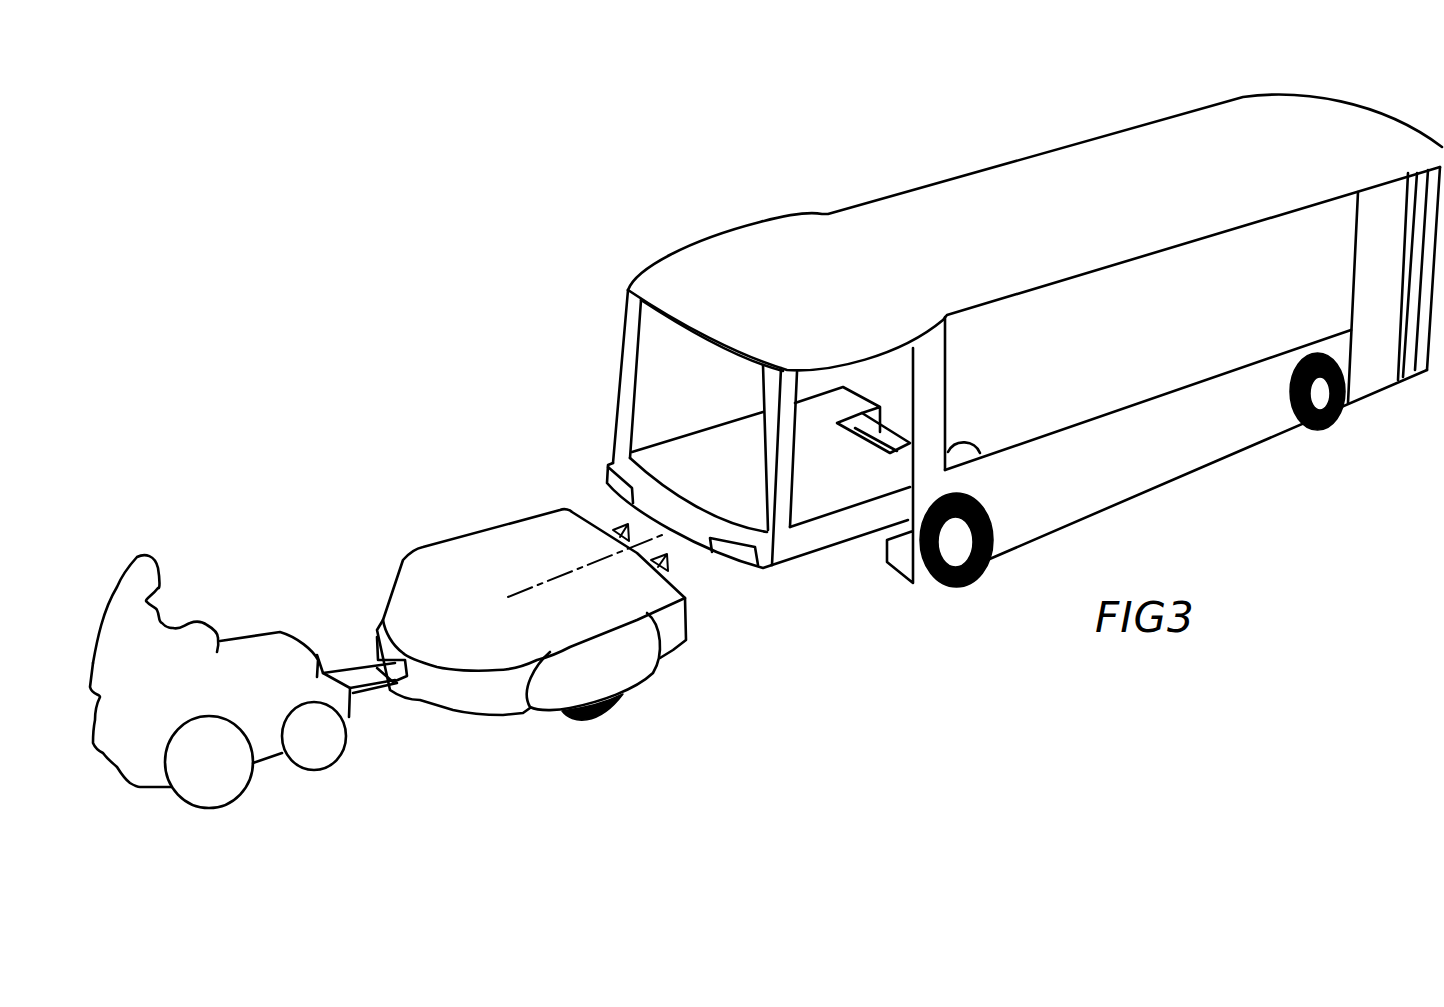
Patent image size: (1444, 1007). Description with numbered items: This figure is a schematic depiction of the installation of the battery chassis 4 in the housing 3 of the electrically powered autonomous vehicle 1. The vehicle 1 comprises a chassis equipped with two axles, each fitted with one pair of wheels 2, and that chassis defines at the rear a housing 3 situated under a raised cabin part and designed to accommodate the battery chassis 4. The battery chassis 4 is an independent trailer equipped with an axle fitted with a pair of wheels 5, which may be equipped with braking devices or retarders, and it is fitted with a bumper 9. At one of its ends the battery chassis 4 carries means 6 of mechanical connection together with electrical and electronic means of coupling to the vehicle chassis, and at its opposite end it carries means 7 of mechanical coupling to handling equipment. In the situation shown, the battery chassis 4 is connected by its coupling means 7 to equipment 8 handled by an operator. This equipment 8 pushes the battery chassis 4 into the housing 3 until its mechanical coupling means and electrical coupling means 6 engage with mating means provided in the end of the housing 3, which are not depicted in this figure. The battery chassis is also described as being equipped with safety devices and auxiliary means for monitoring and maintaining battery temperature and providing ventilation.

The electrically powered autonomous vehicle 1 is at (995, 146).
The wheels 2 is at (960, 586).
The housing 3 is at (820, 561).
The battery chassis 4 is at (467, 522).
The wheels 5 is at (603, 718).
The means of mechanical connection and electrical coupling 6 is at (668, 563).
The means of mechanical coupling 7 is at (395, 691).
The equipment 8 is at (135, 748).
The bumper 9 is at (478, 698).